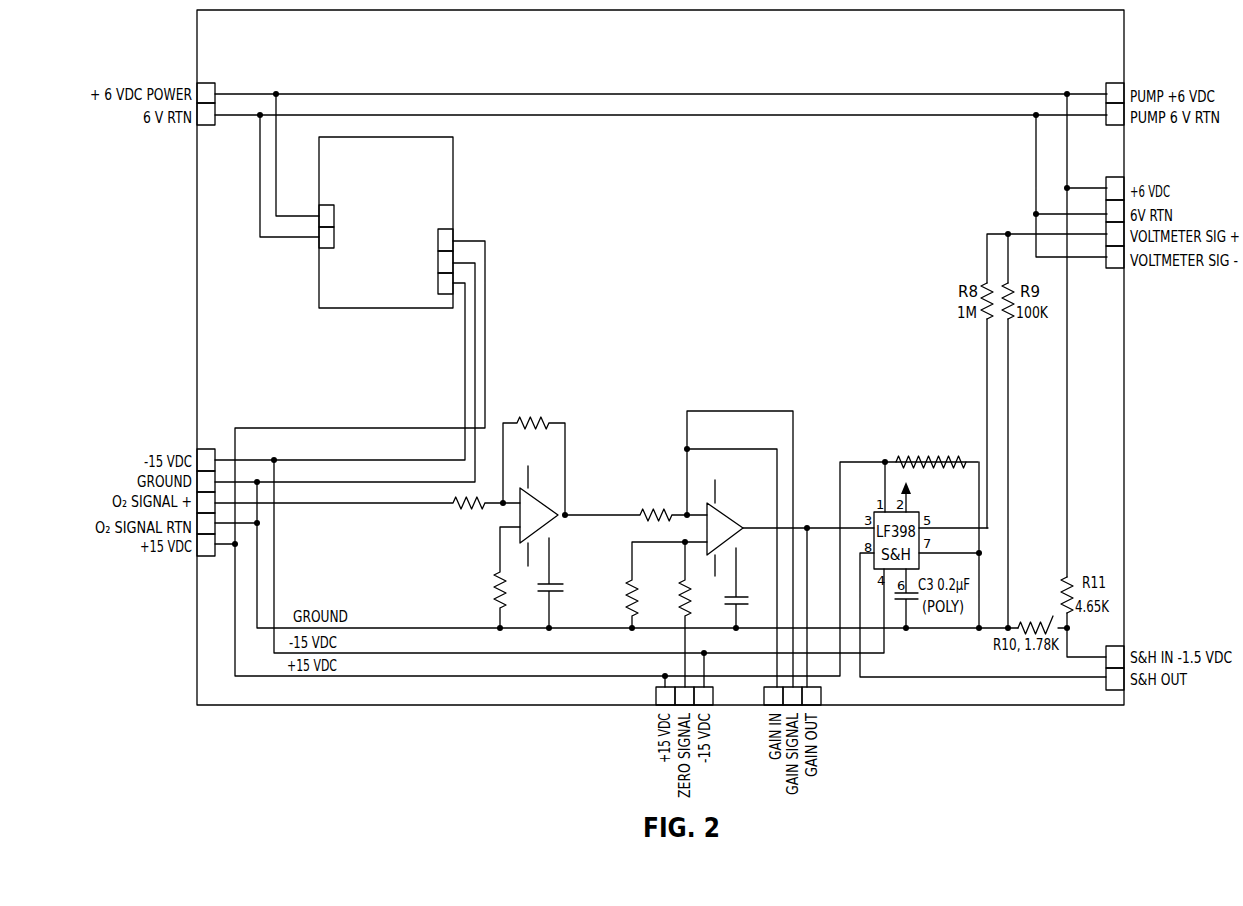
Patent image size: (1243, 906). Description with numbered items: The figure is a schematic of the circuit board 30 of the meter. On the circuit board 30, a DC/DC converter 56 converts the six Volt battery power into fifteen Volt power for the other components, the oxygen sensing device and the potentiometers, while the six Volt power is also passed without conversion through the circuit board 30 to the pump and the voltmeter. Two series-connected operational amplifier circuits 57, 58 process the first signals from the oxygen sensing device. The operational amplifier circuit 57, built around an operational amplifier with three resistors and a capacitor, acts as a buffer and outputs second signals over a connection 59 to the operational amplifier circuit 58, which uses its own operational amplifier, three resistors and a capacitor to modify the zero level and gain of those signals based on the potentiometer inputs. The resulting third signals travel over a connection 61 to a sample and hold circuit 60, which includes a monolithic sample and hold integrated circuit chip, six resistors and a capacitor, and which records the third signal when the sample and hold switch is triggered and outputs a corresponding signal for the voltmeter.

The circuit board 30 is at (1150, 443).
The DC/DC converter 56 is at (453, 193).
The operational amplifier circuit 57 is at (576, 401).
The operational amplifier circuit 58 is at (670, 434).
The connection 59 is at (618, 517).
The sample and hold circuit 60 is at (890, 396).
The connection 61 is at (807, 525).